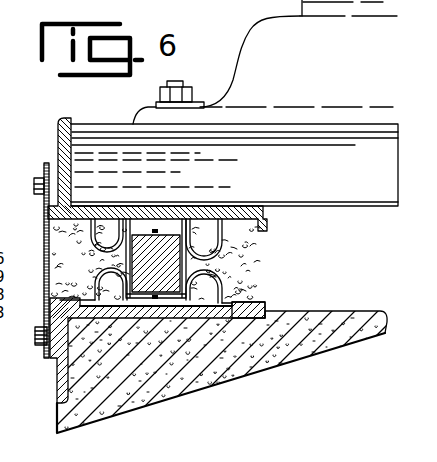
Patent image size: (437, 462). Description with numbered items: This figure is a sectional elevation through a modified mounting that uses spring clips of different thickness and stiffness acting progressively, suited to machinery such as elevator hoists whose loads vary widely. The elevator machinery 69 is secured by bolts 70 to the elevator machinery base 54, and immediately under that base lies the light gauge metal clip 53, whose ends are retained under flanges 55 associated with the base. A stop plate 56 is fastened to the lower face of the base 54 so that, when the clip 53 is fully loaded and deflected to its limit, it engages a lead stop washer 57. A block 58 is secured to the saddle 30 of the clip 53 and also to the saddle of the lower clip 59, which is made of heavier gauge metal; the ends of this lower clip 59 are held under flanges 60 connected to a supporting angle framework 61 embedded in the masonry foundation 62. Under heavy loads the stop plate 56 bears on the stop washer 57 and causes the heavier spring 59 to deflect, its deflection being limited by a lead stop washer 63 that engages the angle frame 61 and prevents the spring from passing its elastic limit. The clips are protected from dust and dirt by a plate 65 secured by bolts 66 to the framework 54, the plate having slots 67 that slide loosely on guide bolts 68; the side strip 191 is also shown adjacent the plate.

The saddle 30 is at (160, 235).
The light gauge metal clip 53 is at (248, 263).
The elevator machinery base 54 is at (334, 191).
The flanges 55 is at (250, 248).
The stop plate 56 is at (204, 239).
The stop washer 57 is at (124, 235).
The block 58 is at (158, 274).
The lower clip 59 is at (251, 291).
The flanges 60 is at (58, 268).
The supporting angle framework 61 is at (111, 284).
The masonry foundation 62 is at (110, 417).
The lead stop washer 63 is at (204, 286).
The plate 65 is at (51, 228).
The bolts 66 is at (36, 181).
The slots 67 is at (45, 352).
The guide bolts 68 is at (36, 337).
The elevator machinery 69 is at (240, 52).
The bolts 70 is at (155, 98).
The side strip 191 is at (46, 245).